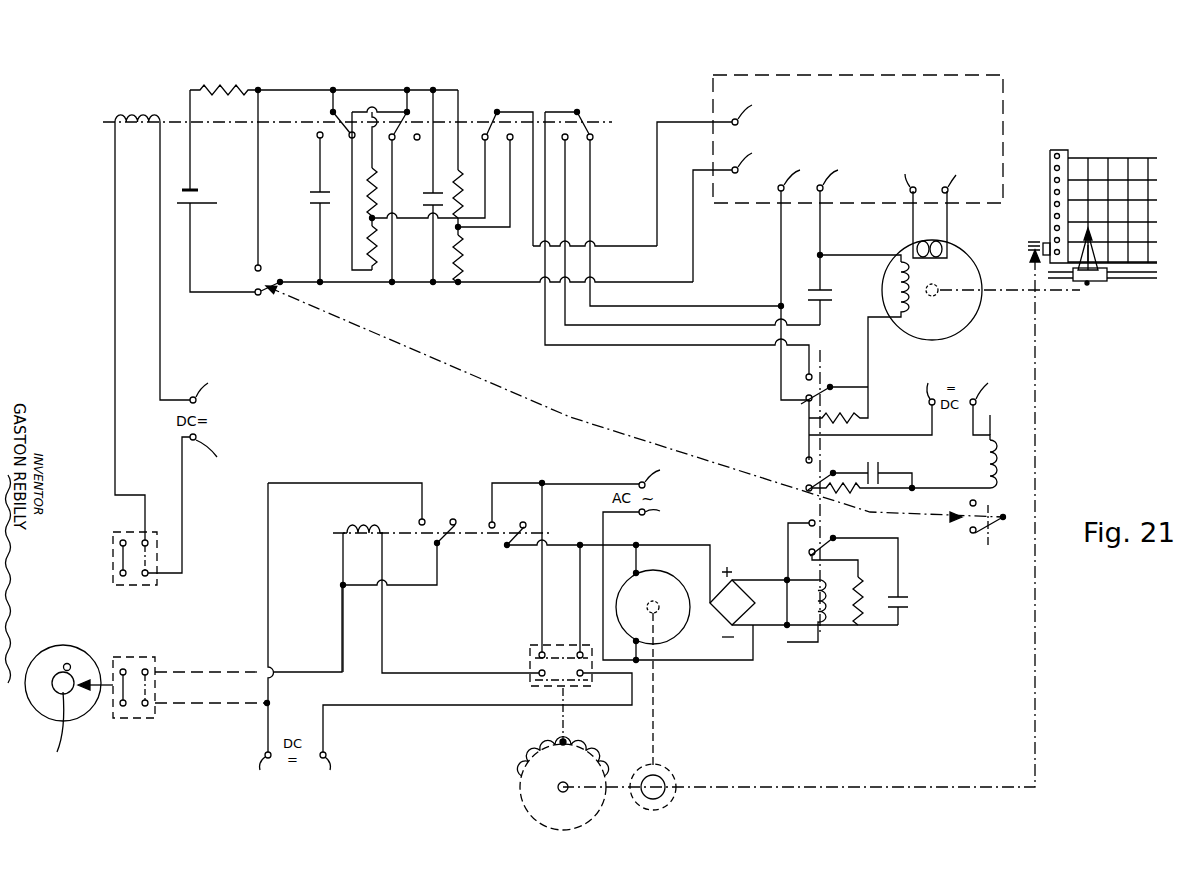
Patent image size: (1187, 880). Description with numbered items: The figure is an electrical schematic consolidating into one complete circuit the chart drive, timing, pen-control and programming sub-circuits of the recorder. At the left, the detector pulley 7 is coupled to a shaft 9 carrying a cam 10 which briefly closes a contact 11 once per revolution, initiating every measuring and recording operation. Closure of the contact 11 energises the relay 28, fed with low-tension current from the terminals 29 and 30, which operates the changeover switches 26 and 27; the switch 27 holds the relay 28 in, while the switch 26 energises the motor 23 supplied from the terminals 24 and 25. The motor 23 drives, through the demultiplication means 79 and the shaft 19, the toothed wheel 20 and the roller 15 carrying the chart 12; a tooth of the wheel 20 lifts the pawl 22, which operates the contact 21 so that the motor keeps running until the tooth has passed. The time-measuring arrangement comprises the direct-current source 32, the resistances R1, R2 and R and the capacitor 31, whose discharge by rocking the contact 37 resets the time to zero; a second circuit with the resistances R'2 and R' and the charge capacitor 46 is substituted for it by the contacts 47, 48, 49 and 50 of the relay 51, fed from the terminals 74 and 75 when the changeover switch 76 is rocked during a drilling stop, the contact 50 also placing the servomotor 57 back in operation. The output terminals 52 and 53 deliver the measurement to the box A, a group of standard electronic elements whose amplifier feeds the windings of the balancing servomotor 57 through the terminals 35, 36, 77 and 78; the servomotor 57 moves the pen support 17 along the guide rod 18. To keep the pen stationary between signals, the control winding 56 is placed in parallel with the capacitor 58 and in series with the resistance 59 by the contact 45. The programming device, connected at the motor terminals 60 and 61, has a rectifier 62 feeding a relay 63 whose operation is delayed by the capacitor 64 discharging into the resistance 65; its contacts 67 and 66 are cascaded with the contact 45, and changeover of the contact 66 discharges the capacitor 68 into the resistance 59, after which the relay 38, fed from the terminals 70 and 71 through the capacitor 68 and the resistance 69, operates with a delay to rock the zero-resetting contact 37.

The detector pulley 7 is at (70, 652).
The shaft 9 is at (55, 735).
The cam 10 is at (56, 668).
The contact 11 is at (135, 662).
The chart 12 is at (1102, 172).
The roller 15 is at (1045, 239).
The support 17 is at (1096, 284).
The guide rod 18 is at (1138, 282).
The shaft 19 is at (559, 791).
The toothed wheel 20 is at (537, 784).
The contact 21 is at (537, 663).
The pawl 22 is at (567, 727).
The motor 23 is at (667, 620).
The terminal 24 is at (662, 474).
The terminal 25 is at (678, 582).
The changeover switch 26 is at (507, 520).
The changeover switch 27 is at (438, 515).
The relay 28 is at (363, 527).
The terminal 29 is at (471, 731).
The terminal 30 is at (266, 770).
The capacitor 31 is at (313, 188).
The direct-current source 32 is at (197, 205).
The terminal 35 is at (794, 304).
The terminal 36 is at (833, 219).
The contact 37 is at (255, 297).
The relay 38 is at (984, 462).
The contact 45 is at (798, 402).
The charge capacitor 46 is at (429, 190).
The contact 47 is at (325, 130).
The contact 48 is at (412, 122).
The contact 49 is at (503, 122).
The contact 50 is at (592, 125).
The relay 51 is at (140, 118).
The output terminal 52 is at (717, 168).
The output terminal 53 is at (735, 210).
The control winding 56 is at (912, 297).
The servomotor 57 is at (968, 302).
The capacitor 58 is at (823, 288).
The resistance 59 is at (866, 418).
The terminal 60 is at (636, 545).
The terminal 61 is at (636, 662).
The rectifier 62 is at (730, 597).
The relay 63 is at (812, 620).
The capacitor 64 is at (906, 611).
The resistance 65 is at (866, 582).
The changeover switch 66 is at (812, 477).
The changeover switch 67 is at (808, 530).
The capacitor 68 is at (880, 469).
The resistance 69 is at (858, 493).
The terminal 70 is at (928, 383).
The terminal 71 is at (988, 401).
The terminal 74 is at (212, 386).
The terminal 75 is at (216, 458).
The changeover switch 76 is at (152, 587).
The terminal 77 is at (899, 179).
The terminal 78 is at (960, 179).
The demultiplication means 79 is at (1047, 405).
The broken outline box A is at (930, 95).
The resistance R1 is at (224, 77).
The resistance R2 is at (356, 192).
The resistance R is at (364, 248).
The resistance R'2 is at (472, 194).
The resistance R' is at (469, 259).